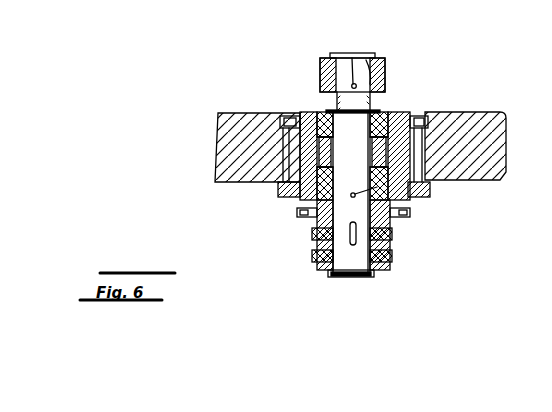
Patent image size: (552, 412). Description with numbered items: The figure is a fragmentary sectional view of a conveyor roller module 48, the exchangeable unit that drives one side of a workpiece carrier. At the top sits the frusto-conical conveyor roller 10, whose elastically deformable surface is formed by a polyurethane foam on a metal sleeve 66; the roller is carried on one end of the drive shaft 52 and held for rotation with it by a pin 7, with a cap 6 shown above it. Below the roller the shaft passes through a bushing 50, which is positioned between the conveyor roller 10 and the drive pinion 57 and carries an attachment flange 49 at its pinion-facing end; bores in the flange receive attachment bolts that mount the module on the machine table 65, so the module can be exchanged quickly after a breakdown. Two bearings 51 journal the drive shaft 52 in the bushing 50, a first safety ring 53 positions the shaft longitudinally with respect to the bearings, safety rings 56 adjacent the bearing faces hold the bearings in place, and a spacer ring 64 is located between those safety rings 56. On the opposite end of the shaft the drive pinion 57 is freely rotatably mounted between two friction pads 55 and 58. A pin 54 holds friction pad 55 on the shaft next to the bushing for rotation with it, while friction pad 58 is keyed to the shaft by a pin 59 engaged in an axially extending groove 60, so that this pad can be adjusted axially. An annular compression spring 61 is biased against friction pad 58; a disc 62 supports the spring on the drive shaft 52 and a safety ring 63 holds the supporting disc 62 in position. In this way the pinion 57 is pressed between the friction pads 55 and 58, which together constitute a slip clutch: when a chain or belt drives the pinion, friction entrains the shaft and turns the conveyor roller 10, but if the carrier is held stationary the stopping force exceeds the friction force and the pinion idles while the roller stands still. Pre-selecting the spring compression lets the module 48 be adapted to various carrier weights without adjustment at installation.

The cap 6 is at (346, 54).
The pin 7 is at (354, 82).
The frusto-conical conveyor roller 10 is at (325, 60).
The conveyor roller module 48 is at (406, 96).
The attachment flange 49 is at (426, 195).
The bushing 50 is at (298, 165).
The bearings 51 is at (385, 112).
The drive shaft 52 is at (349, 258).
The safety ring 53 is at (345, 108).
The pin 54 is at (455, 113).
The friction pad 55 is at (432, 172).
The safety rings 56 is at (446, 113).
The drive pinion 57 is at (409, 218).
The friction pad 58 is at (391, 235).
The pin 59 is at (358, 234).
The axially extending groove 60 is at (366, 273).
The annular compression spring 61 is at (315, 245).
The disc 62 is at (317, 267).
The safety ring 63 is at (330, 278).
The spacer ring 64 is at (315, 113).
The machine table 65 is at (227, 144).
The metal sleeve 66 is at (376, 62).